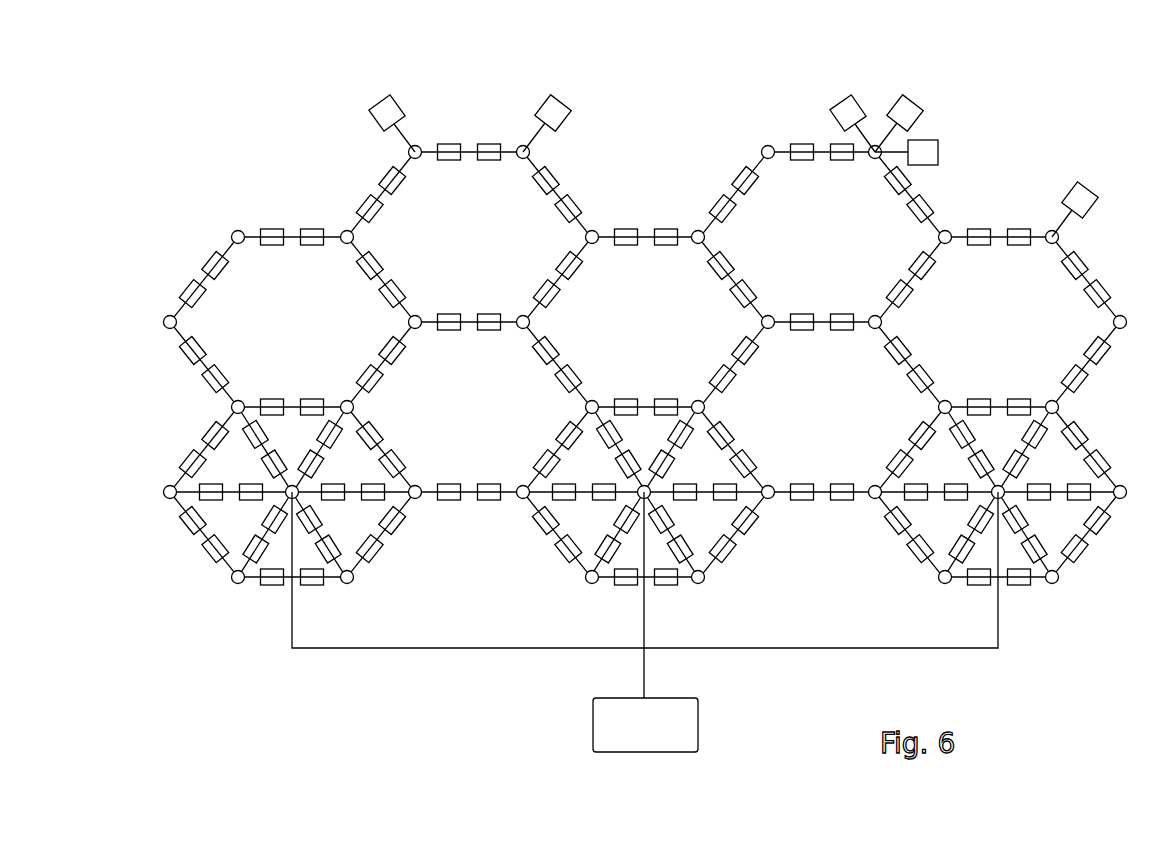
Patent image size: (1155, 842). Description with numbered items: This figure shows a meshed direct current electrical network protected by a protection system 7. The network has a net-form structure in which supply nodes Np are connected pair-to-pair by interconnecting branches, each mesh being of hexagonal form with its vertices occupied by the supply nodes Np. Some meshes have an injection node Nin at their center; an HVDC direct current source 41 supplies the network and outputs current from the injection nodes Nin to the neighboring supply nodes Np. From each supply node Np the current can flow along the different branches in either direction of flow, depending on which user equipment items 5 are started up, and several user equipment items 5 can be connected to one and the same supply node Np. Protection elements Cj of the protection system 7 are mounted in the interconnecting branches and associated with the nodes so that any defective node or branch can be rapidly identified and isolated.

The user equipment item 5 is at (370, 120).
The protection system 7 is at (484, 258).
The HVDC direct current source 41 is at (698, 718).
The supply node Np is at (417, 145).
The protection element Cj is at (448, 313).
The injection node Nin is at (300, 489).